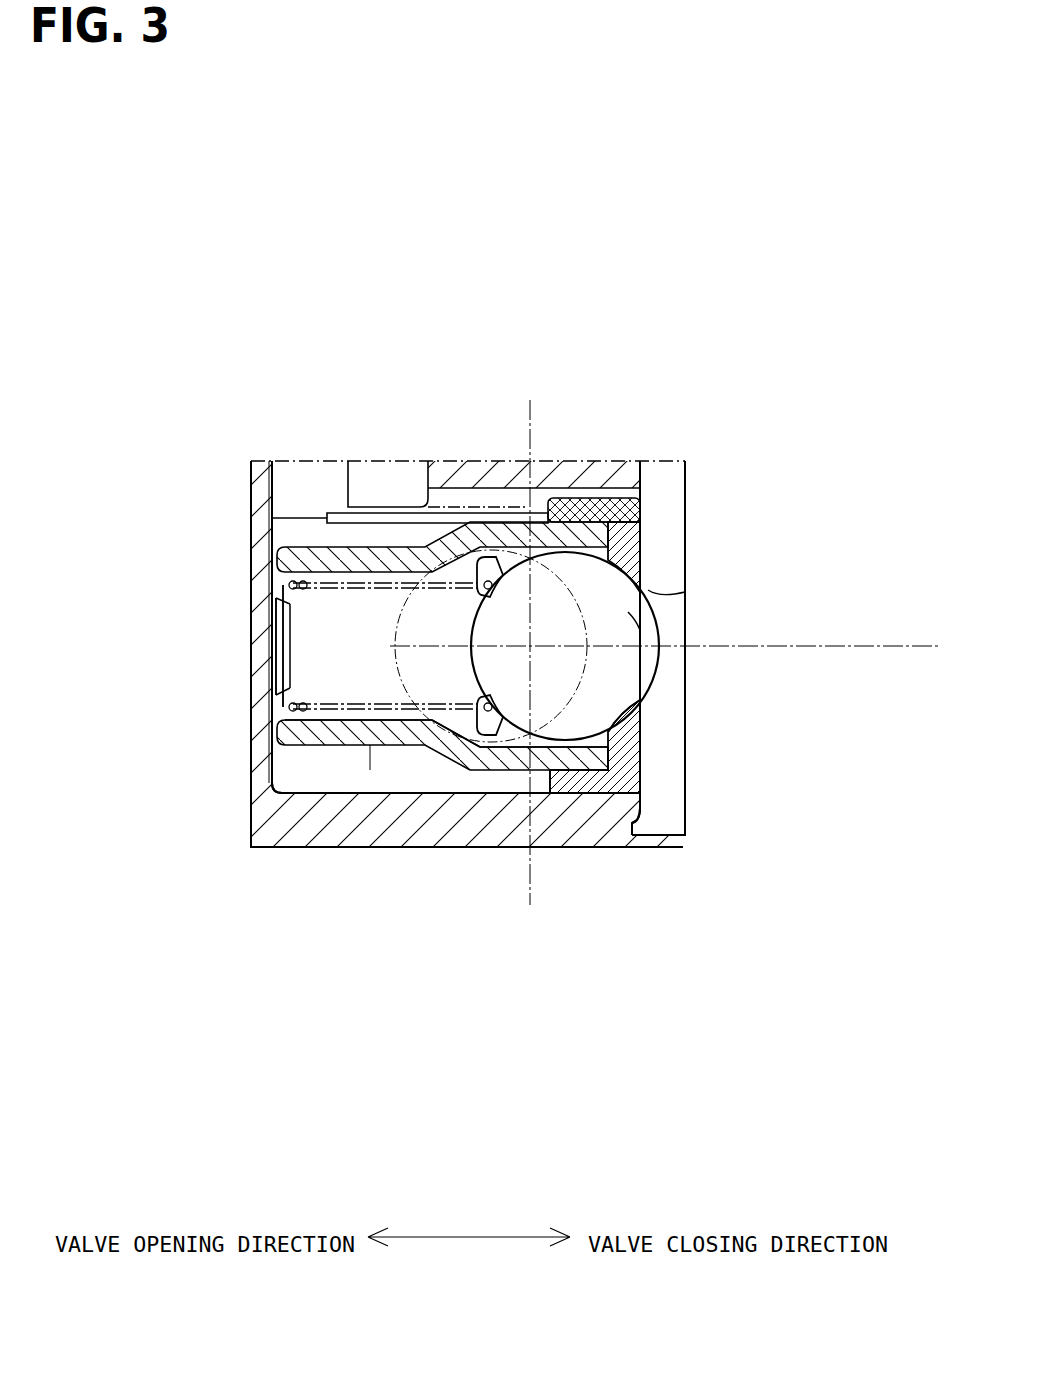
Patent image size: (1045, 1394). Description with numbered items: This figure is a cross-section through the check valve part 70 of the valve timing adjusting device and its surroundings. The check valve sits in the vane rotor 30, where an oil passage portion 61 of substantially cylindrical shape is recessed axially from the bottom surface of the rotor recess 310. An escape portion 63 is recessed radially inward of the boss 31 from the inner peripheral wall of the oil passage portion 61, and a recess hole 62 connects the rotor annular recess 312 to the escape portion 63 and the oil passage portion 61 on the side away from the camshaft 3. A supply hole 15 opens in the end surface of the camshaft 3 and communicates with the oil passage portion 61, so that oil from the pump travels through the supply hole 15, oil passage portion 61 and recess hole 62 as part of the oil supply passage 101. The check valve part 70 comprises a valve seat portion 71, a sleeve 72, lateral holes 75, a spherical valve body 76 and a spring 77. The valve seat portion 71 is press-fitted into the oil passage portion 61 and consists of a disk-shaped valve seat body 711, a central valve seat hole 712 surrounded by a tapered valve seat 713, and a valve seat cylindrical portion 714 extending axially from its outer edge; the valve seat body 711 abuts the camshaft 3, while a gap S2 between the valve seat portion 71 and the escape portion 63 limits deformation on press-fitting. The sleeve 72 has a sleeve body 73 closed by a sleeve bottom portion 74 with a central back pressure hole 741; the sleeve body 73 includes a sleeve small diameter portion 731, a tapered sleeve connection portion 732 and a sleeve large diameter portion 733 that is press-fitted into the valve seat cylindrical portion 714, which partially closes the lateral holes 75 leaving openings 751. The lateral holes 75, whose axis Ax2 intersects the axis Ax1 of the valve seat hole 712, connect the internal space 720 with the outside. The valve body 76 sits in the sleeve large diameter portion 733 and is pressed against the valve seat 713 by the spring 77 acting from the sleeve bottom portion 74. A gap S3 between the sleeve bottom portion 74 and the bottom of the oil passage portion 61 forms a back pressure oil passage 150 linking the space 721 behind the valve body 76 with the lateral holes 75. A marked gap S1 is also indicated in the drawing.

The camshaft 3 is at (660, 818).
The supply hole 15 is at (648, 722).
The vane rotor 30 is at (250, 491).
The boss 31 is at (272, 519).
The oil passage portion 61 is at (300, 782).
The recess hole 62 is at (417, 510).
The escape portion 63 is at (642, 512).
The check valve part 70 is at (668, 636).
The valve seat portion 71 is at (642, 780).
The sleeve 72 is at (405, 750).
The sleeve body 73 is at (415, 752).
The sleeve bottom portion 74 is at (280, 702).
The lateral holes 75 is at (485, 548).
The valve body 76 is at (635, 616).
The spring 77 is at (375, 748).
The oil supply passage 101 is at (660, 590).
The back pressure oil passage 150 is at (290, 590).
The rotor recess 310 is at (643, 469).
The rotor annular recess 312 is at (283, 478).
The valve seat body 711 is at (642, 752).
The valve seat hole 712 is at (642, 700).
The valve seat 713 is at (655, 673).
The valve seat cylindrical portion 714 is at (550, 788).
The internal space 720 is at (358, 636).
The space 721 is at (282, 641).
The sleeve small diameter portion 731 is at (350, 748).
The sleeve connection portion 732 is at (442, 755).
The sleeve large diameter portion 733 is at (503, 765).
The back pressure hole 741 is at (283, 668).
The openings 751 is at (498, 556).
The space S1 is at (642, 547).
The gap S2 is at (642, 494).
The gap S3 is at (276, 572).
The axis Ax1 is at (915, 646).
The axis Ax2 is at (533, 409).